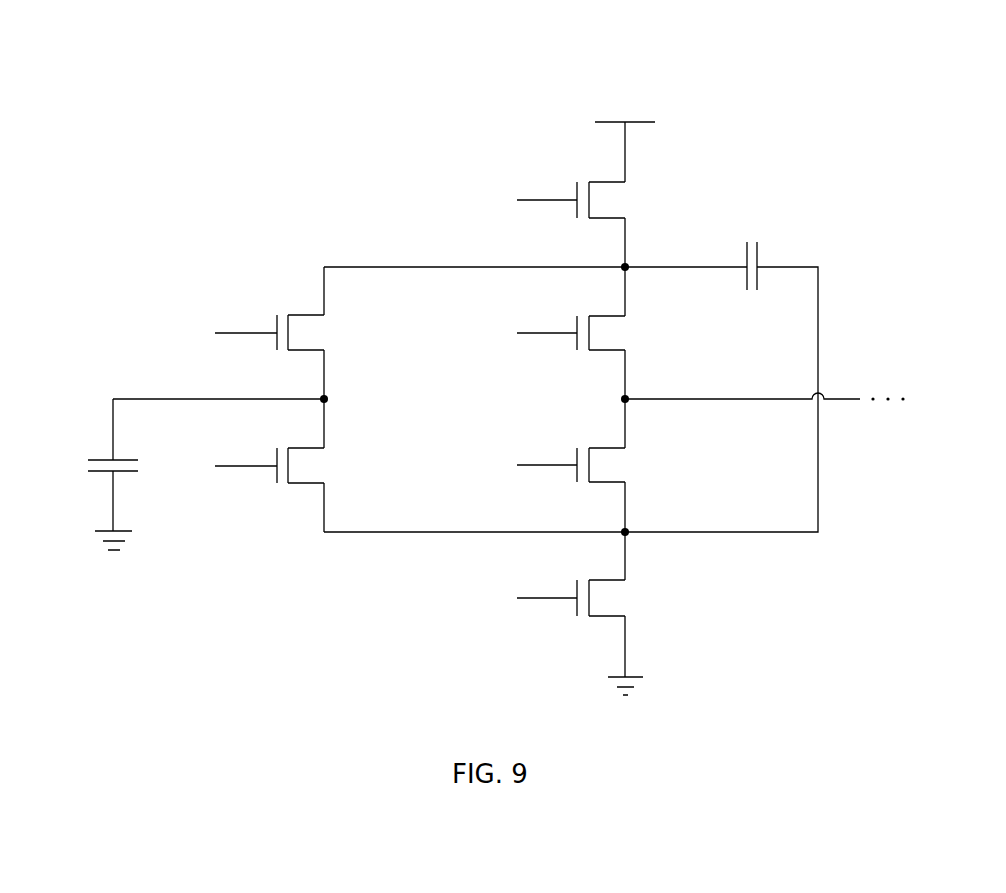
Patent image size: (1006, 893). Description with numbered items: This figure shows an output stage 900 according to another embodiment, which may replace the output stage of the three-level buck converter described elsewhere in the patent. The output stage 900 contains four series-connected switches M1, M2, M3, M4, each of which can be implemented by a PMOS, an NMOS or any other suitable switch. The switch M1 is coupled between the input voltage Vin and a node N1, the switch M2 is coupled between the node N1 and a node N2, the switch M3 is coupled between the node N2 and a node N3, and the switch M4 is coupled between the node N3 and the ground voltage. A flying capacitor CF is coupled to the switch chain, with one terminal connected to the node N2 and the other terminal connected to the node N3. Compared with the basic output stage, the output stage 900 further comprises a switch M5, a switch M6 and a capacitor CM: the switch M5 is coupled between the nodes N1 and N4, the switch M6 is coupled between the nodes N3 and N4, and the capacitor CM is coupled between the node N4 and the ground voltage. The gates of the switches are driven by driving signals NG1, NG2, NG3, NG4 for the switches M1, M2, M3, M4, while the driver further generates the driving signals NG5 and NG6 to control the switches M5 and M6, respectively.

The output stage 900 is at (865, 102).
The switch M1 is at (621, 200).
The switch M2 is at (621, 333).
The switch M3 is at (621, 465).
The switch M4 is at (621, 598).
The switch M5 is at (321, 334).
The switch M6 is at (321, 465).
The driving signal NG1 is at (533, 186).
The driving signal NG2 is at (533, 318).
The driving signal NG3 is at (533, 449).
The driving signal NG4 is at (533, 583).
The driving signal NG5 is at (232, 318).
The driving signal NG6 is at (232, 449).
The node N1 is at (647, 253).
The node N2 is at (647, 385).
The node N3 is at (647, 517).
The node N4 is at (346, 401).
The flying capacitor CF is at (751, 250).
The capacitor CM is at (89, 468).
The input voltage Vin is at (625, 106).